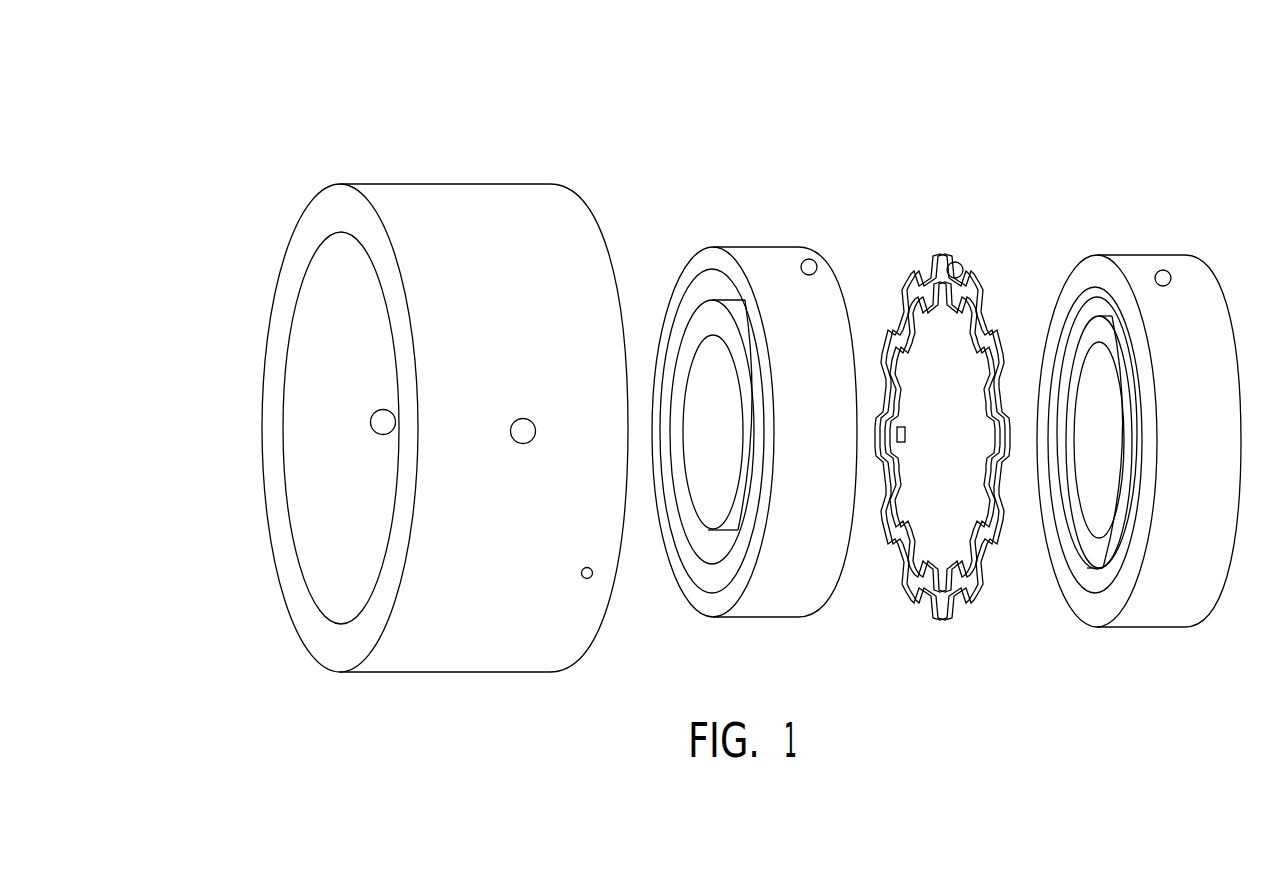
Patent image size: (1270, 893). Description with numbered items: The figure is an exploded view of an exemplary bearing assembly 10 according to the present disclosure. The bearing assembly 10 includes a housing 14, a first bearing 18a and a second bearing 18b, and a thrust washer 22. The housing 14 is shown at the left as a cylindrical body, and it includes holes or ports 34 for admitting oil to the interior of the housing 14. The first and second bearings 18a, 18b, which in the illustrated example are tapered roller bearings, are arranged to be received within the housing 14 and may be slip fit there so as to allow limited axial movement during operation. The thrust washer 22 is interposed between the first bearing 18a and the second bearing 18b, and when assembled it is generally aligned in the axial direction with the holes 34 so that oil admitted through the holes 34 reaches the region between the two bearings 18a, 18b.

The bearing assembly 10 is at (212, 110).
The housing 14 is at (510, 185).
The first bearing 18a is at (770, 248).
The second bearing 18b is at (1150, 256).
The thrust washer 22 is at (937, 254).
The holes or ports 34 is at (510, 431).